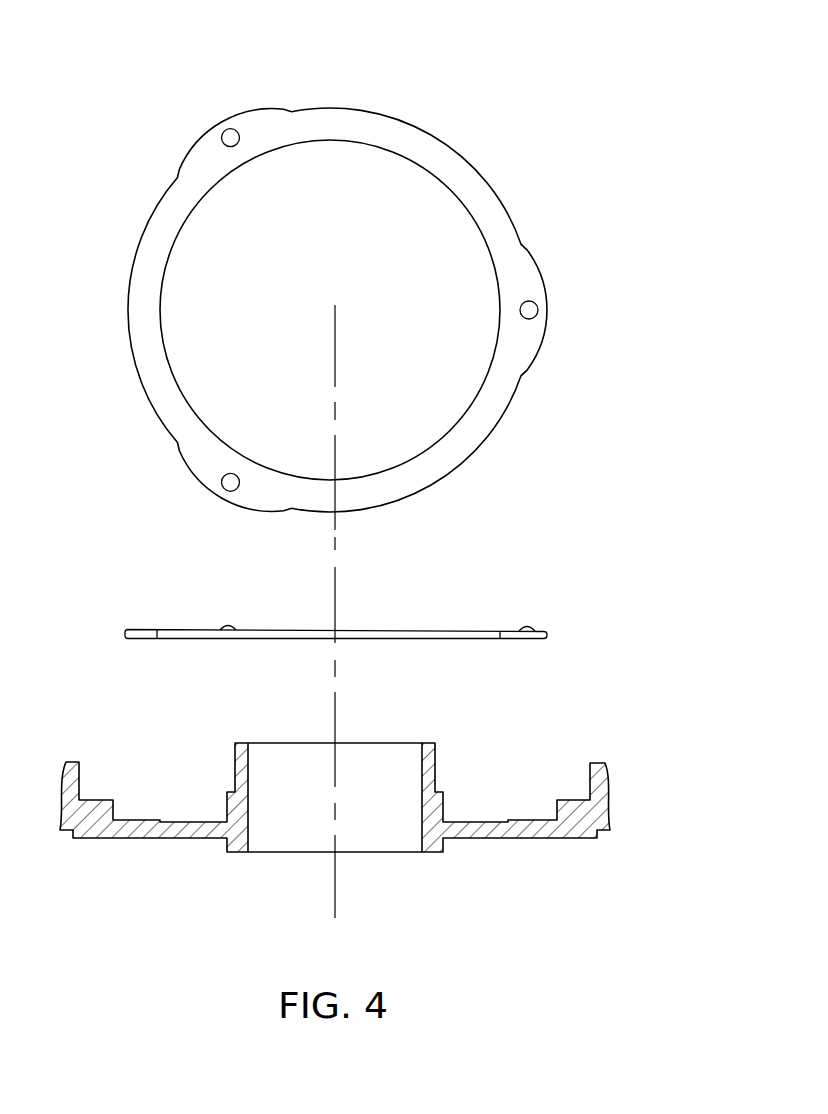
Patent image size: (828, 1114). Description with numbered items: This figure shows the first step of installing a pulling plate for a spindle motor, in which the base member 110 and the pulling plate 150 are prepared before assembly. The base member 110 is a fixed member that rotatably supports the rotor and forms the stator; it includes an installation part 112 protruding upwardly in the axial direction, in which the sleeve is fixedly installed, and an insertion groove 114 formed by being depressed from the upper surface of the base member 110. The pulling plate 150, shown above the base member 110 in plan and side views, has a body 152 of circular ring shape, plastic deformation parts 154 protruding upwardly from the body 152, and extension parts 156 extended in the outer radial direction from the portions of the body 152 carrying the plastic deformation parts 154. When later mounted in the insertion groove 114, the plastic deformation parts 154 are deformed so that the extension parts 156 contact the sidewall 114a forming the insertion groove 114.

The pulling plate 150 is at (358, 34).
The body 152 is at (468, 434).
The plastic deformation part 154 is at (532, 310).
The extension part 156 is at (530, 335).
The base member 110 is at (584, 822).
The installation part 112 is at (249, 813).
The insertion groove 114 is at (538, 813).
The sidewall 114a is at (553, 813).